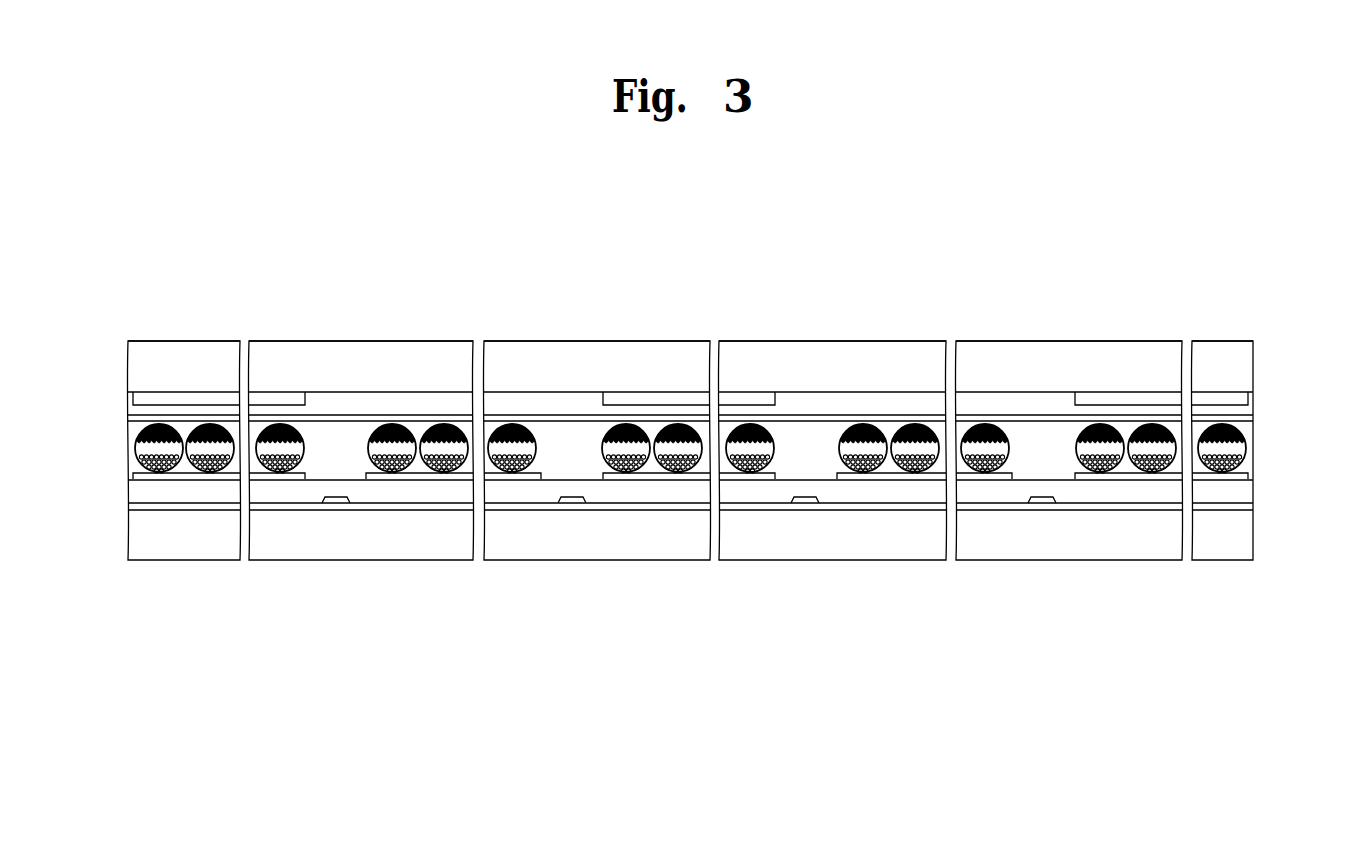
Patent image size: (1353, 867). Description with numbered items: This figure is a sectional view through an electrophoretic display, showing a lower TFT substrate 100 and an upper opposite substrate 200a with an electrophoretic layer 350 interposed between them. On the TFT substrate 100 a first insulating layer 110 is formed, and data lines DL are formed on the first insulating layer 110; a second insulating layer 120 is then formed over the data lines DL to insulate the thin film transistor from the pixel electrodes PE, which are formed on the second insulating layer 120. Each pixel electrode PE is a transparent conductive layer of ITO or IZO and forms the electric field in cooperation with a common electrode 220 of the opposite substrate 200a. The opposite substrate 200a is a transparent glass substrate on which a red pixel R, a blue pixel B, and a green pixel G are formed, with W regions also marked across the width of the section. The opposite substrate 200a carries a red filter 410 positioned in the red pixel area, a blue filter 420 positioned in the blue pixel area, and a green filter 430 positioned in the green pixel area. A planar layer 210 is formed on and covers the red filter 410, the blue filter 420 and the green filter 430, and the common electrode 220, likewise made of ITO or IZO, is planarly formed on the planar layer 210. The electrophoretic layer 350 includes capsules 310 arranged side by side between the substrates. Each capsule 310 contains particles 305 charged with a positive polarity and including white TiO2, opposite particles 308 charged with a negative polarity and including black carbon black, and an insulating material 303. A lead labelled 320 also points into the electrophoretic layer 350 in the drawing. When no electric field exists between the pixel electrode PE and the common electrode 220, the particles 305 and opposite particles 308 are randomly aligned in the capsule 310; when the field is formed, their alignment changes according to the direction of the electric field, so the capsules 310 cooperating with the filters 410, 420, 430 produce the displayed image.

The TFT substrate 100 is at (1247, 532).
The first insulating layer 110 is at (1247, 503).
The second insulating layer 120 is at (1247, 488).
The pixel electrode PE is at (185, 481).
The data line DL is at (337, 500).
The opposite substrate 200a is at (1247, 359).
The planar layer 210 is at (1247, 406).
The common electrode 220 is at (1247, 420).
The capsule 310 is at (118, 450).
The insulating material 303 is at (146, 450).
The particle 305 is at (136, 432).
The opposite particle 308 is at (137, 465).
The binder 320 is at (838, 451).
The electrophoretic layer 350 is at (656, 514).
The red filter 410 is at (178, 400).
The blue filter 420 is at (652, 400).
The green filter 430 is at (1126, 400).
The red pixel R is at (306, 341).
The white pixel region W is at (1012, 341).
The blue pixel B is at (776, 341).
The green pixel G is at (1248, 341).